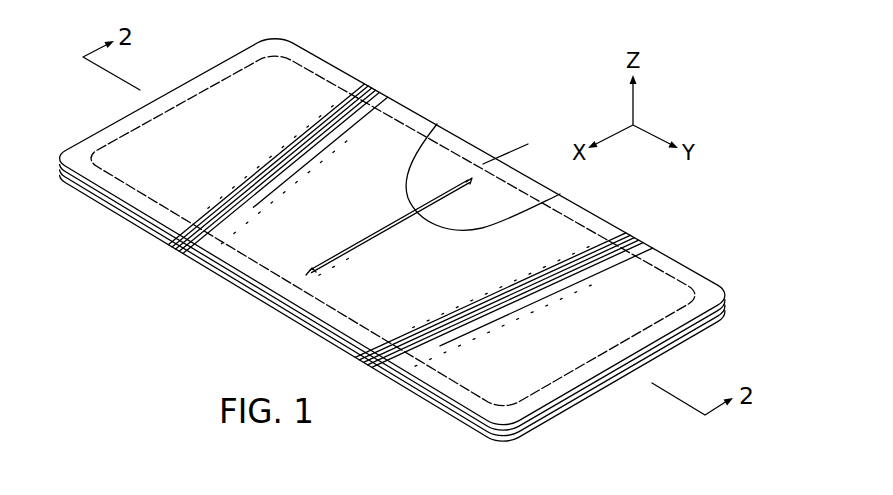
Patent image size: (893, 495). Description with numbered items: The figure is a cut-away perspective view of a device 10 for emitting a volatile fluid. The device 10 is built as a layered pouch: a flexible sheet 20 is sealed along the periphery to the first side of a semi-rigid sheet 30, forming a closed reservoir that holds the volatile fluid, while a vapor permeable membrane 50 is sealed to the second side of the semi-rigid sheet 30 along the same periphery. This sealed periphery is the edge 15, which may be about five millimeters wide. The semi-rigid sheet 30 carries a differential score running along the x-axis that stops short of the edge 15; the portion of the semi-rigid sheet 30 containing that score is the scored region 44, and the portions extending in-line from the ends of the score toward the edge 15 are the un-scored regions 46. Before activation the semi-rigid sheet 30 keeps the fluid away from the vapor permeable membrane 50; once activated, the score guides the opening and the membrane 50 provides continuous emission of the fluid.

The device 10 is at (160, 306).
The edge 15 is at (206, 76).
The flexible sheet 20 is at (446, 412).
The semi-rigid sheet 30 is at (587, 393).
The vapor permeable membrane 50 is at (307, 102).
The scored region 44 is at (380, 233).
The un-scored region 46 is at (498, 162).